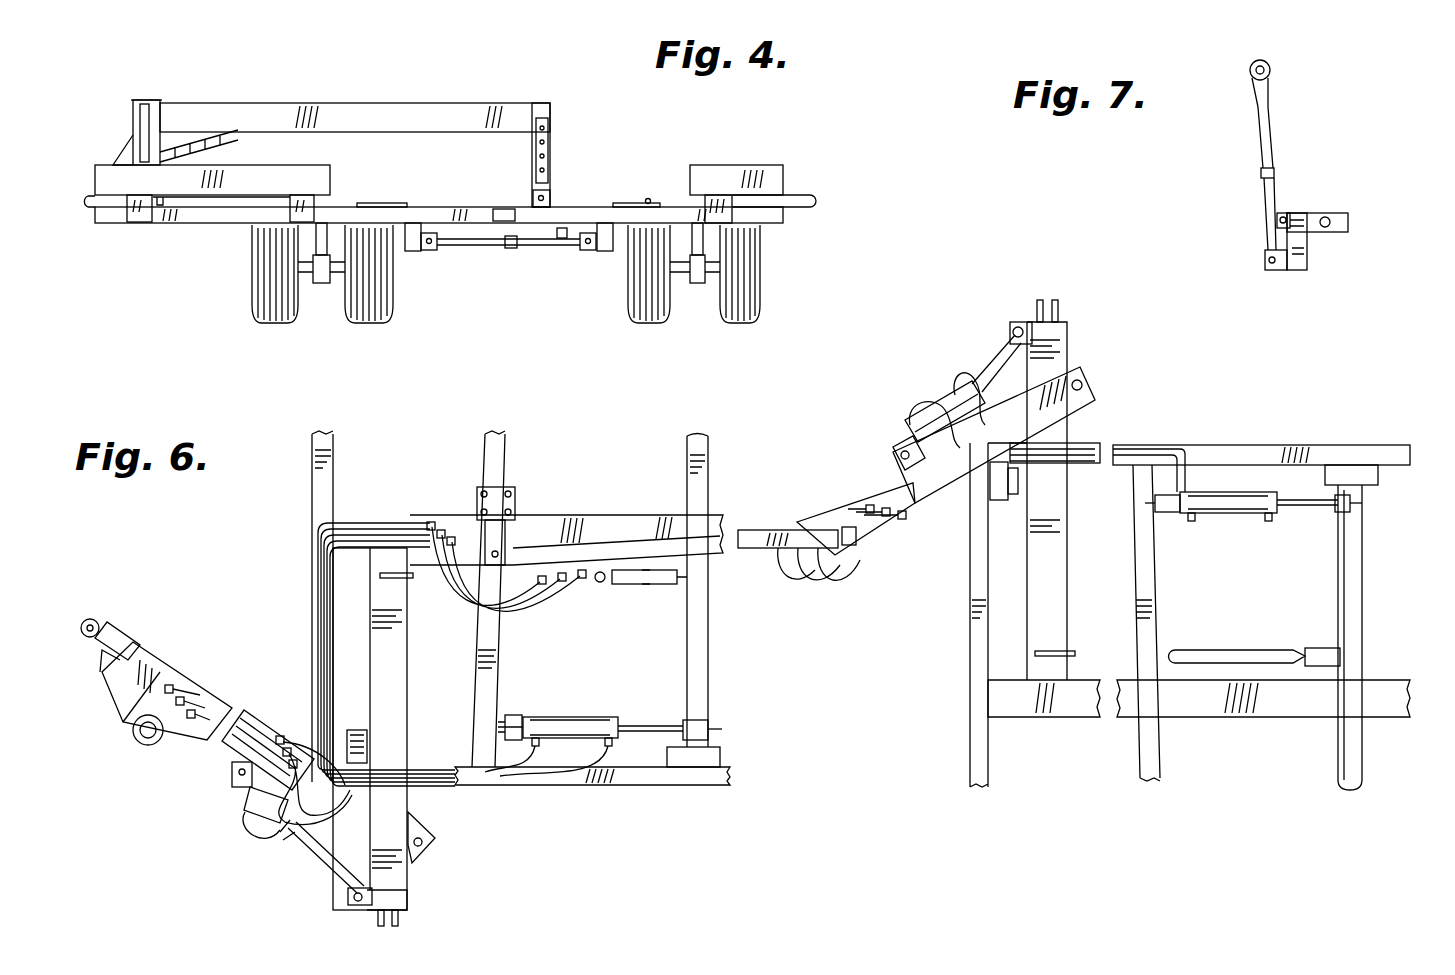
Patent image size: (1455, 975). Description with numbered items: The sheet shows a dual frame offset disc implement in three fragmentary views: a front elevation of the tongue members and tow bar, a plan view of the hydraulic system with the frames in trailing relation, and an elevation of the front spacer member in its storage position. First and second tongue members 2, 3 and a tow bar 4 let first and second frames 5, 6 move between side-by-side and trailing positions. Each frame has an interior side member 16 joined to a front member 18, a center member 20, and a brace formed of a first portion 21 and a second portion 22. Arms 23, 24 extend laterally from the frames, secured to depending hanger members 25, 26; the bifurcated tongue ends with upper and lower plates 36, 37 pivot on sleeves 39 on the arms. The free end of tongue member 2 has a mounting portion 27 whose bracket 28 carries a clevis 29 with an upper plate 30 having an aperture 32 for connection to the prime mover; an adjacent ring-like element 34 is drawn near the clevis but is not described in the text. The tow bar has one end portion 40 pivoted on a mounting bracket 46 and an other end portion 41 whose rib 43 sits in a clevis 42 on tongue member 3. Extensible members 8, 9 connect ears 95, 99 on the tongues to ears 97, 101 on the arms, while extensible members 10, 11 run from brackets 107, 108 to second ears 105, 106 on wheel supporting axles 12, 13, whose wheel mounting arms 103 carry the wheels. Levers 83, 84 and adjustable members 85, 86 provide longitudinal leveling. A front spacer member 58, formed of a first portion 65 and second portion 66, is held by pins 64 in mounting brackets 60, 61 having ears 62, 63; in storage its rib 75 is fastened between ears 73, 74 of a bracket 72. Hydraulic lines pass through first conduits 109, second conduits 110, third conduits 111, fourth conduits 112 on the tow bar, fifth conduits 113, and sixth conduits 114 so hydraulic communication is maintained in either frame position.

In FIG. 4, the first tongue member 2 is at (459, 206).
In FIG. 6, the first tongue member 2 is at (218, 745).
In FIG. 4, the second tongue member 3 is at (605, 206).
In FIG. 6, the second tongue member 3 is at (955, 490).
In FIG. 4, the tow bar 4 is at (385, 102).
In FIG. 6, the tow bar 4 is at (598, 515).
In FIG. 4, the first frame 5 is at (336, 181).
In FIG. 6, the first frame 5 is at (620, 788).
In FIG. 4, the second frame 6 is at (688, 175).
In FIG. 7, the second frame 6 is at (1326, 210).
In FIG. 6, the second frame 6 is at (1255, 443).
In FIG. 6, the extensible member 8 is at (293, 844).
In FIG. 6, the extensible member 9 is at (930, 410).
In FIG. 6, the extensible member 10 is at (578, 718).
In FIG. 6, the extensible member 11 is at (1240, 513).
In FIG. 4, the wheel supporting axle 12 is at (95, 207).
In FIG. 6, the wheel supporting axle 12 is at (700, 625).
In FIG. 4, the wheel supporting axle 13 is at (806, 210).
In FIG. 6, the wheel supporting axle 13 is at (1350, 573).
In FIG. 6, the interior side member 16 is at (702, 785).
In FIG. 4, the front member 18 is at (98, 175).
In FIG. 6, the front member 18 is at (310, 458).
In FIG. 6, the center member 20 is at (635, 515).
In FIG. 6, the first portion of brace member 21 is at (493, 690).
In FIG. 6, the second portion of brace member 22 is at (500, 463).
In FIG. 4, the arm 23 is at (180, 220).
In FIG. 6, the arm 23 is at (398, 695).
In FIG. 4, the arm 24 is at (773, 224).
In FIG. 7, the arm 24 is at (1348, 215).
In FIG. 6, the arm 24 is at (1053, 563).
In FIG. 4, the hanger member 25 is at (293, 200).
In FIG. 6, the hanger member 25 is at (353, 730).
In FIG. 4, the hanger member 26 is at (717, 195).
In FIG. 6, the hanger member 26 is at (1002, 495).
In FIG. 6, the mounting portion 27 is at (157, 668).
In FIG. 6, the bracket 28 is at (125, 645).
In FIG. 6, the clevis 29 is at (110, 637).
In FIG. 6, the upper plate 30 is at (95, 660).
In FIG. 6, the aperture 32 is at (88, 620).
In FIG. 6, the ring 34 is at (145, 745).
In FIG. 4, the upper plate 36 is at (382, 203).
In FIG. 4, the lower plate 37 is at (408, 251).
In FIG. 6, the sleeve 39 is at (425, 843).
In FIG. 4, the one end portion of tow bar 40 is at (173, 104).
In FIG. 6, the one end portion of tow bar 40 is at (518, 600).
In FIG. 4, the other end portion of tow bar 41 is at (550, 102).
In FIG. 6, the other end portion of tow bar 41 is at (795, 533).
In FIG. 4, the clevis 42 is at (533, 195).
In FIG. 4, the rib 43 is at (552, 198).
In FIG. 4, the mounting bracket 46 is at (118, 127).
In FIG. 6, the mounting bracket 46 is at (517, 503).
In FIG. 4, the front spacer member 58 is at (500, 250).
In FIG. 7, the front spacer member 58 is at (1268, 155).
In FIG. 4, the mounting bracket 60 is at (432, 250).
In FIG. 6, the mounting bracket 60 is at (408, 900).
In FIG. 4, the mounting bracket 61 is at (587, 250).
In FIG. 7, the mounting bracket 61 is at (1295, 270).
In FIG. 6, the mounting bracket 61 is at (1058, 317).
In FIG. 6, the ear 62 is at (1040, 310).
In FIG. 6, the ear 63 is at (1055, 310).
In FIG. 7, the pin 64 is at (1265, 262).
In FIG. 7, the first portion of front spacer member 65 is at (1258, 138).
In FIG. 7, the second portion of front spacer member 66 is at (1263, 200).
In FIG. 7, the bracket 72 is at (1283, 213).
In FIG. 6, the bracket 72 is at (1038, 307).
In FIG. 6, the ear 73 is at (1065, 325).
In FIG. 6, the ear 74 is at (1038, 318).
In FIG. 4, the rib 75 is at (560, 240).
In FIG. 6, the lever 83 is at (400, 578).
In FIG. 6, the lever 84 is at (1060, 653).
In FIG. 6, the adjustable member 85 is at (603, 583).
In FIG. 6, the adjustable member 86 is at (1240, 652).
In FIG. 6, the ears 95 is at (235, 772).
In FIG. 6, the ears 97 is at (348, 898).
In FIG. 6, the ears 99 is at (895, 455).
In FIG. 6, the ears 101 is at (1021, 340).
In FIG. 4, the wheel mounting arm 103 is at (322, 283).
In FIG. 6, the second ear 105 is at (710, 720).
In FIG. 6, the second ear 106 is at (1360, 510).
In FIG. 6, the bracket 107 is at (510, 715).
In FIG. 6, the bracket 108 is at (1157, 512).
In FIG. 6, the first plurality of conduits 109 is at (193, 690).
In FIG. 6, the second plurality of conduits 110 is at (485, 780).
In FIG. 6, the third plurality of conduits 111 is at (360, 530).
In FIG. 6, the fourth plurality of conduits 112 is at (643, 583).
In FIG. 6, the fifth plurality of conduits 113 is at (875, 502).
In FIG. 6, the sixth plurality of conduits 114 is at (1130, 448).